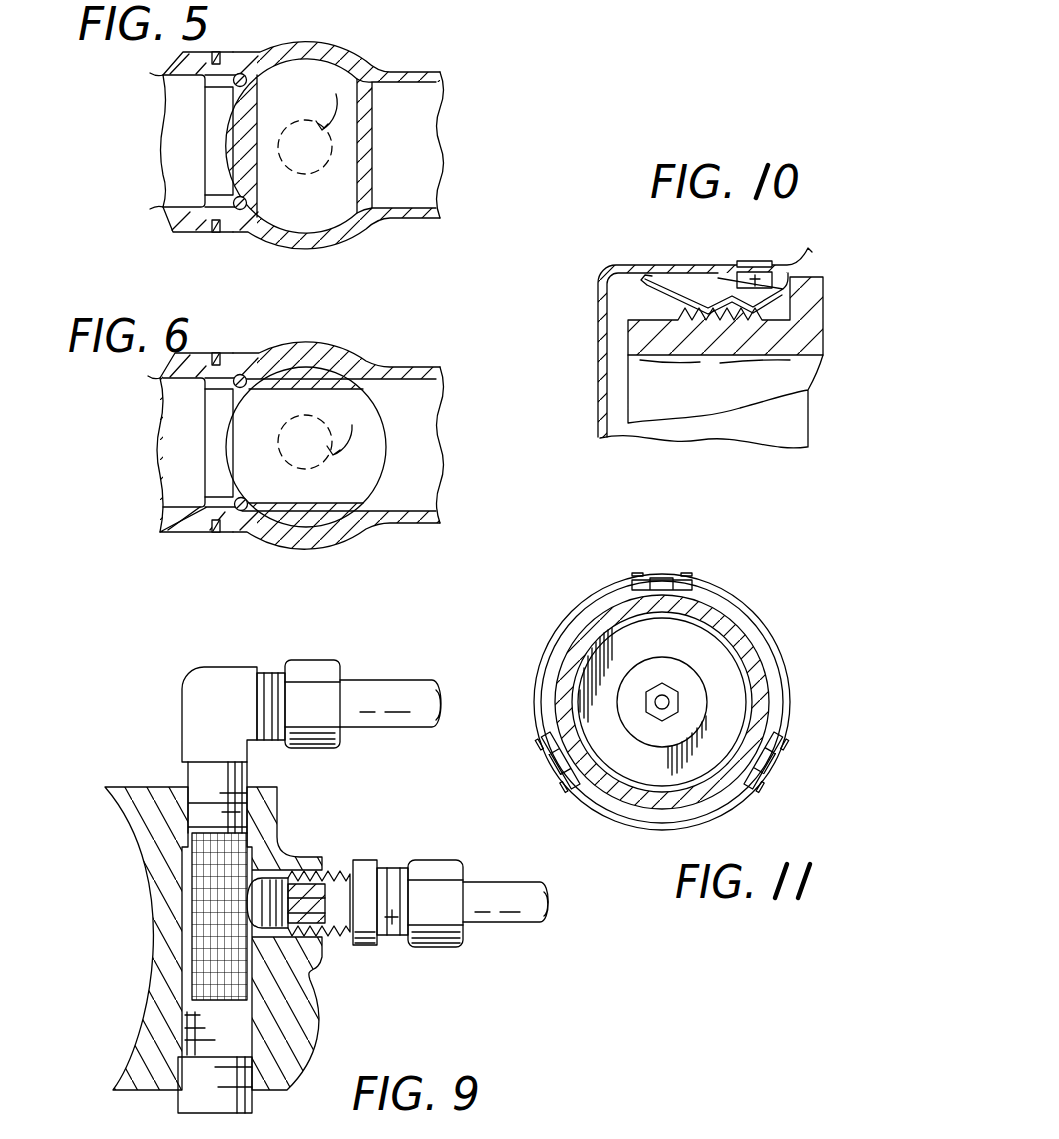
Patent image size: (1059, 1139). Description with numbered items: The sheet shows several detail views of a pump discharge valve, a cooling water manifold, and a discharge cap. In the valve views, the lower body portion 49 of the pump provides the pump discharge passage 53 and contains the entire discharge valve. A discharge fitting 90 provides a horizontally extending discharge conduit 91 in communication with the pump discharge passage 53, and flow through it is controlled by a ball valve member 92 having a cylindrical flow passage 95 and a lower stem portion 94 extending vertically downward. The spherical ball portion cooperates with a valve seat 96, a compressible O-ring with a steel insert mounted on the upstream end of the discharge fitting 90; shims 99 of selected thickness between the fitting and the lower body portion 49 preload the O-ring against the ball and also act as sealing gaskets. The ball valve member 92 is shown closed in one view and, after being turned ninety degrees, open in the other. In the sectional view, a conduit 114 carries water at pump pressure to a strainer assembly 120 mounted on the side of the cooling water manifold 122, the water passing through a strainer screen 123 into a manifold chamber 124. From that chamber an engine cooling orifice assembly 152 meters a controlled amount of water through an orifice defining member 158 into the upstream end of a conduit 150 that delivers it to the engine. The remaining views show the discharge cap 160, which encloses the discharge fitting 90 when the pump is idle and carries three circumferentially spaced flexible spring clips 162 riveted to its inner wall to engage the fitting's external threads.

In FIG. 5, the lower body portion 49 is at (408, 218).
In FIG. 6, the lower body portion 49 is at (340, 533).
In FIG. 5, the pump discharge passage 53 is at (428, 110).
In FIG. 6, the pump discharge passage 53 is at (423, 434).
In FIG. 5, the discharge fitting 90 is at (187, 213).
In FIG. 6, the discharge fitting 90 is at (181, 355).
In FIG. 10, the discharge fitting 90 is at (788, 345).
In FIG. 11, the discharge fitting 90 is at (617, 615).
In FIG. 5, the discharge conduit 91 is at (177, 93).
In FIG. 6, the discharge conduit 91 is at (171, 470).
In FIG. 10, the discharge conduit 91 is at (697, 400).
In FIG. 11, the discharge conduit 91 is at (590, 663).
In FIG. 5, the ball valve member 92 is at (233, 152).
In FIG. 6, the ball valve member 92 is at (347, 497).
In FIG. 5, the lower stem portion 94 is at (307, 124).
In FIG. 6, the lower stem portion 94 is at (323, 433).
In FIG. 5, the cylindrical flow passage 95 is at (326, 202).
In FIG. 6, the cylindrical flow passage 95 is at (270, 438).
In FIG. 5, the valve seat 96 is at (240, 73).
In FIG. 6, the valve seat 96 is at (242, 511).
In FIG. 5, the shims 99 is at (217, 233).
In FIG. 6, the shims 99 is at (215, 365).
In FIG. 9, the conduit 114 is at (405, 728).
In FIG. 9, the strainer assembly 120 is at (193, 708).
In FIG. 9, the cooling water manifold 122 is at (278, 813).
In FIG. 9, the strainer screen 123 is at (200, 903).
In FIG. 9, the manifold chamber 124 is at (200, 1017).
In FIG. 9, the conduit 150 is at (517, 912).
In FIG. 9, the engine cooling orifice assembly 152 is at (367, 948).
In FIG. 9, the orifice defining member 158 is at (322, 882).
In FIG. 10, the discharge cap 160 is at (620, 270).
In FIG. 11, the discharge cap 160 is at (718, 586).
In FIG. 10, the spring clips 162 is at (684, 288).
In FIG. 11, the spring clips 162 is at (663, 580).